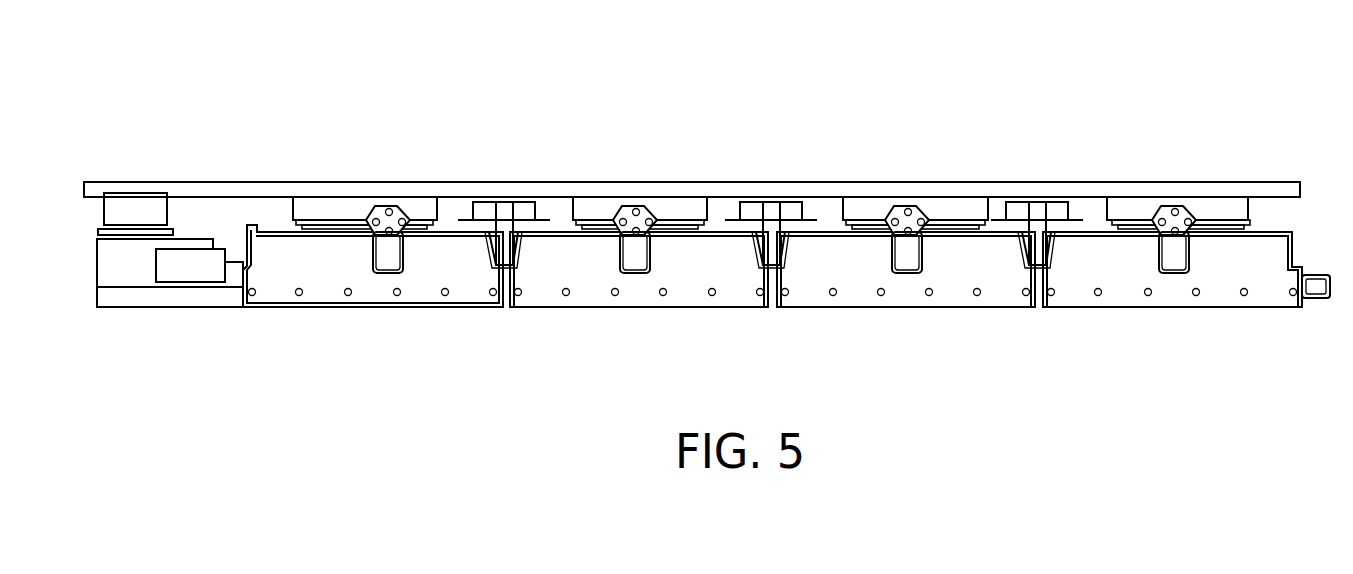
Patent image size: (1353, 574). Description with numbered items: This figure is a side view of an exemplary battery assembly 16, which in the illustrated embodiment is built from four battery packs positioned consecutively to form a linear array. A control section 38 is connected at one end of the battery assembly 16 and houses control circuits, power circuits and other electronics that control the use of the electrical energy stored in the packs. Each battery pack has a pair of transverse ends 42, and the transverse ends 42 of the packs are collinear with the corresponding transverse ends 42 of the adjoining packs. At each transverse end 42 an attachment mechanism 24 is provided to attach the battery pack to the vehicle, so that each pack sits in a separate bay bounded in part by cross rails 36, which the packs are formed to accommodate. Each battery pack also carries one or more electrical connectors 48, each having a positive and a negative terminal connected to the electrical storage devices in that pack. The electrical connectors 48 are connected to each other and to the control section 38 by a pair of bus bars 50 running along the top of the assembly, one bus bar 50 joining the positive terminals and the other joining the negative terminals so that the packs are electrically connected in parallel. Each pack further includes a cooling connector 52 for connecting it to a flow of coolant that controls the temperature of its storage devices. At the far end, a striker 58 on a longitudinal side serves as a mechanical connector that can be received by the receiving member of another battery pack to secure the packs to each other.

The battery assembly 16 is at (212, 104).
The attachment mechanism 24 is at (386, 258).
The cross rails 36 is at (505, 212).
The control section 38 is at (148, 297).
The transverse ends 42 is at (277, 290).
The electrical connectors 48 is at (417, 215).
The bus bars 50 is at (1275, 190).
The cooling connector 52 is at (325, 212).
The striker 58 is at (1318, 300).